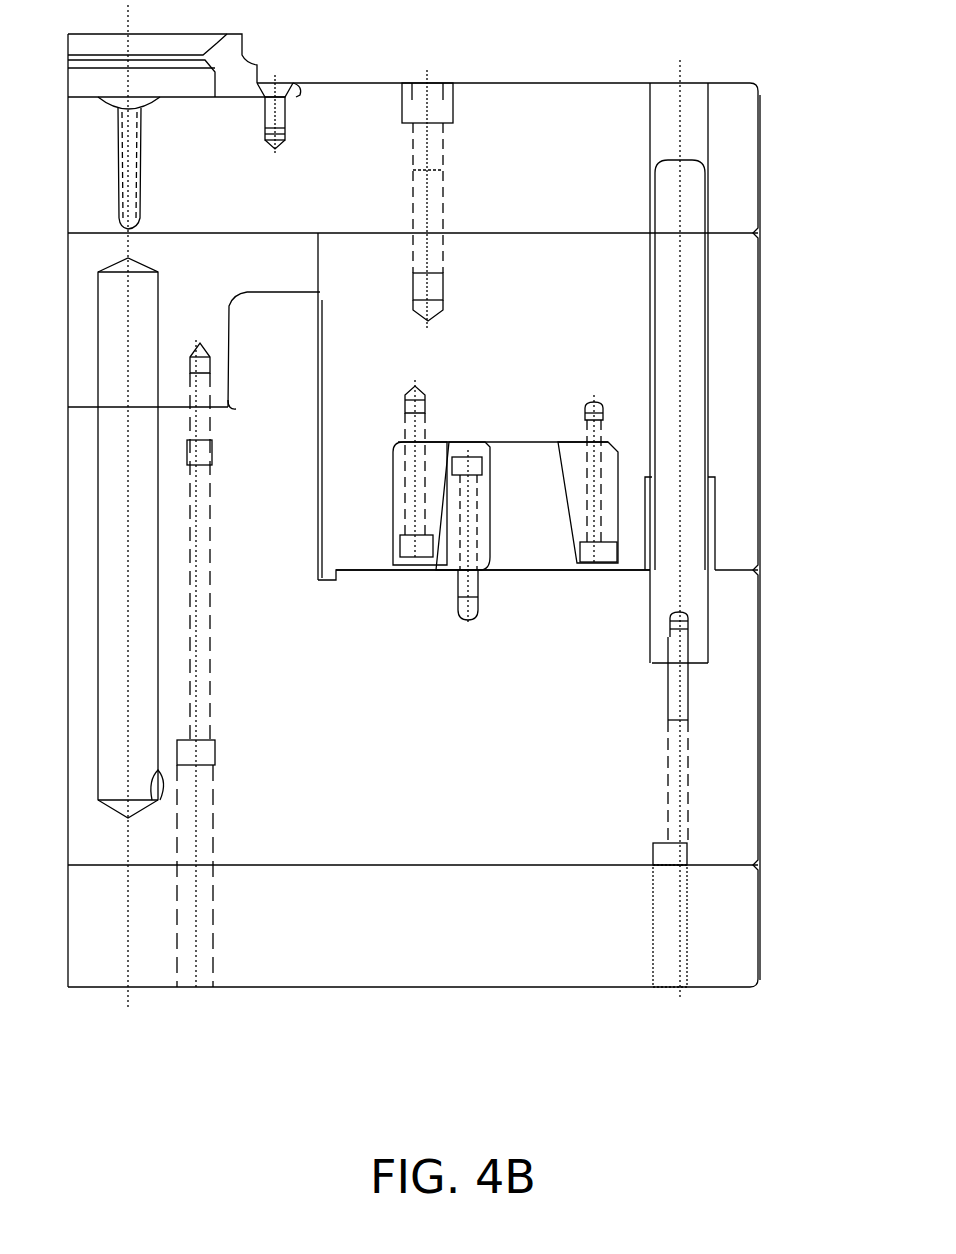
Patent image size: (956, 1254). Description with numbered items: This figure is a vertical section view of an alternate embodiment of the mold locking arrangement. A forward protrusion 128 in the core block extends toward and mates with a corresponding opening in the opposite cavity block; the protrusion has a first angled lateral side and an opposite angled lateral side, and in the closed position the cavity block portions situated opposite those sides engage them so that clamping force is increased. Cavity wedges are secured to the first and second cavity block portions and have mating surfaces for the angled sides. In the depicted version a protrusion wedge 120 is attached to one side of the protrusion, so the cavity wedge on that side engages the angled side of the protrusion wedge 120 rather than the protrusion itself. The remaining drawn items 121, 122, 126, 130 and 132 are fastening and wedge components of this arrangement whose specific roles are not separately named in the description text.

The protrusion wedge 120 is at (452, 503).
The center pin 121 is at (465, 463).
The left pin housing 122 is at (433, 513).
The left pin 126 is at (410, 547).
The forward protrusion 128 is at (528, 472).
The right pin housing 130 is at (610, 475).
The right pin 132 is at (602, 548).